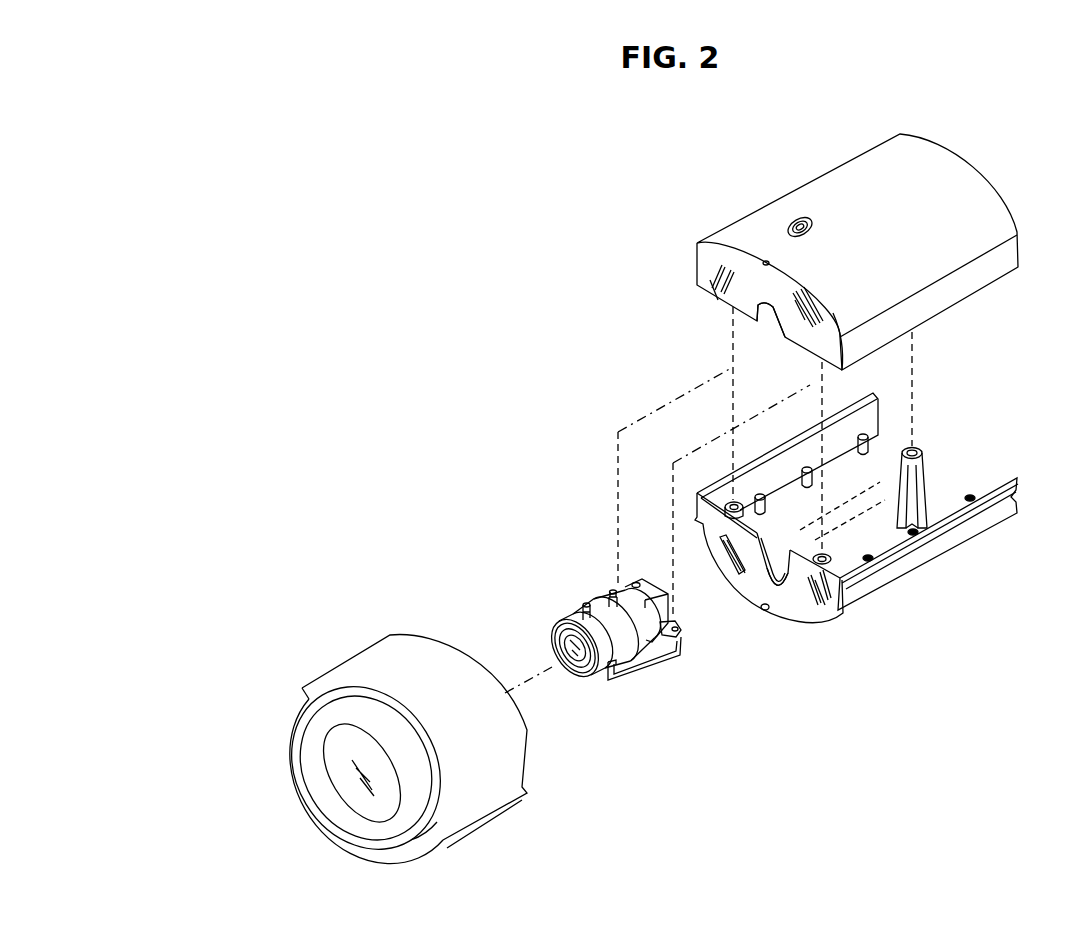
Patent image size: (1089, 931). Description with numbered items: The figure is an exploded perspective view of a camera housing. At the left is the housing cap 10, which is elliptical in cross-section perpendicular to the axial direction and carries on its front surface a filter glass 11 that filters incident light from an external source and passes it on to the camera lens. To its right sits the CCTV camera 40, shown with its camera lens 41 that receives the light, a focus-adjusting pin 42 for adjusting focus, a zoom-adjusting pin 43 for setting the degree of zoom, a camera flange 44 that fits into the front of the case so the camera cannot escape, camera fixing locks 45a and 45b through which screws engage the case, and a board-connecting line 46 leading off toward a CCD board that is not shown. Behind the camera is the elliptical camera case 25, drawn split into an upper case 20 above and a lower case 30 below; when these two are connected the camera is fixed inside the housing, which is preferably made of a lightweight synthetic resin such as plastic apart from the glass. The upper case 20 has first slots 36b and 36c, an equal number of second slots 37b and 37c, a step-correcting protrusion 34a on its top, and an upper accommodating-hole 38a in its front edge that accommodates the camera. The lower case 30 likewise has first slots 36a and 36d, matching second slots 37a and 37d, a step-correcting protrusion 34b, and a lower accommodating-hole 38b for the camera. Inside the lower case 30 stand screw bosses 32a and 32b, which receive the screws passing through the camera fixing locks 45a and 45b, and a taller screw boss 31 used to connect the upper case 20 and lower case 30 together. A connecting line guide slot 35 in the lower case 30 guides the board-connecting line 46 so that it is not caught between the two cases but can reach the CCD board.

The housing cap 10 is at (385, 743).
The filter glass 11 is at (340, 773).
The upper case 20 is at (700, 182).
The camera case 25 is at (1012, 457).
The lower case 30 is at (1003, 568).
The screw boss 31 is at (918, 450).
The screw boss 32a is at (850, 585).
The screw boss 32b is at (733, 505).
The step-correcting protrusion 34a is at (766, 262).
The step-correcting protrusion 34b is at (764, 611).
The connecting line guide slot 35 is at (790, 622).
The first slot 36a is at (838, 600).
The first slot 36b is at (808, 300).
The first slot 36c is at (700, 262).
The first slot 36d is at (712, 543).
The second slot 37a is at (820, 605).
The second slot 37b is at (800, 322).
The second slot 37c is at (718, 297).
The second slot 37d is at (737, 595).
The upper accommodating-hole 38a is at (758, 322).
The lower accommodating-hole 38b is at (765, 530).
The CCTV camera 40 is at (616, 665).
The camera lens 41 is at (580, 652).
The focus-adjusting pin 42 is at (583, 608).
The zoom-adjusting pin 43 is at (607, 598).
The camera flange 44 is at (648, 592).
The camera fixing lock 45a is at (680, 637).
The camera fixing lock 45b is at (612, 591).
The board-connecting line 46 is at (622, 687).